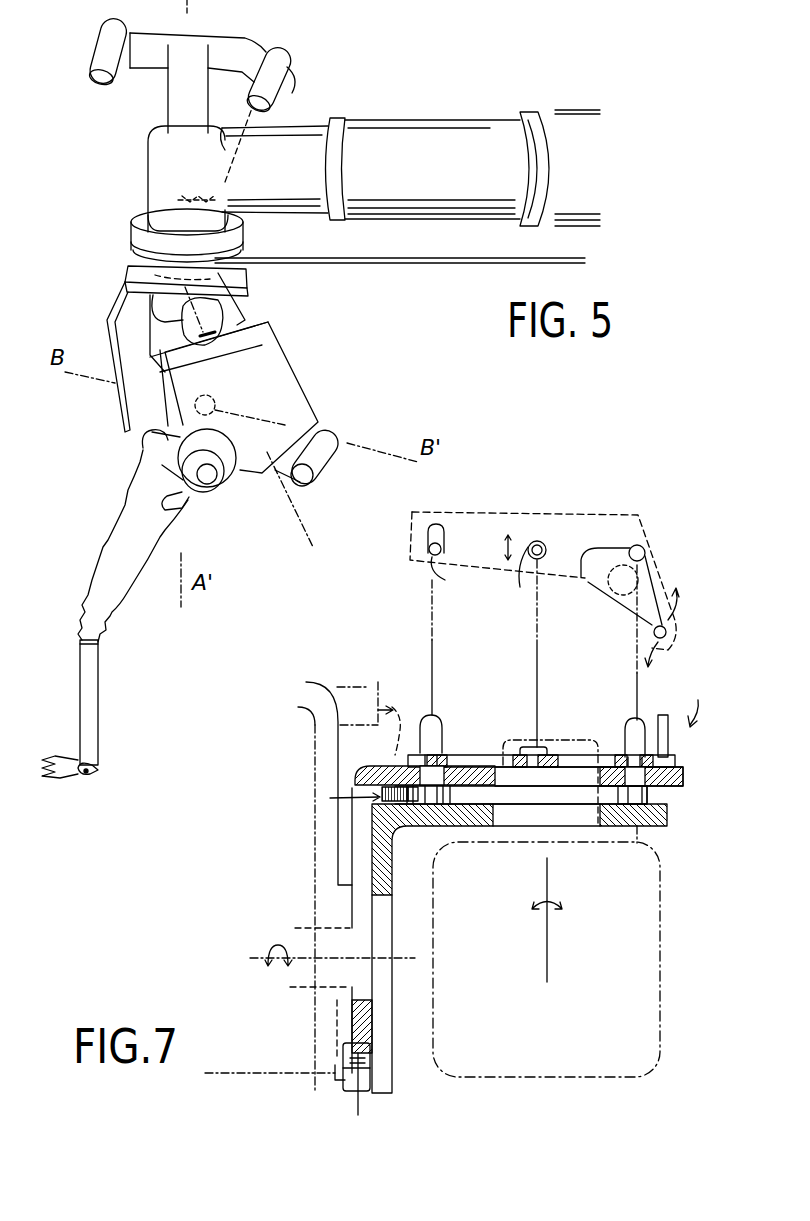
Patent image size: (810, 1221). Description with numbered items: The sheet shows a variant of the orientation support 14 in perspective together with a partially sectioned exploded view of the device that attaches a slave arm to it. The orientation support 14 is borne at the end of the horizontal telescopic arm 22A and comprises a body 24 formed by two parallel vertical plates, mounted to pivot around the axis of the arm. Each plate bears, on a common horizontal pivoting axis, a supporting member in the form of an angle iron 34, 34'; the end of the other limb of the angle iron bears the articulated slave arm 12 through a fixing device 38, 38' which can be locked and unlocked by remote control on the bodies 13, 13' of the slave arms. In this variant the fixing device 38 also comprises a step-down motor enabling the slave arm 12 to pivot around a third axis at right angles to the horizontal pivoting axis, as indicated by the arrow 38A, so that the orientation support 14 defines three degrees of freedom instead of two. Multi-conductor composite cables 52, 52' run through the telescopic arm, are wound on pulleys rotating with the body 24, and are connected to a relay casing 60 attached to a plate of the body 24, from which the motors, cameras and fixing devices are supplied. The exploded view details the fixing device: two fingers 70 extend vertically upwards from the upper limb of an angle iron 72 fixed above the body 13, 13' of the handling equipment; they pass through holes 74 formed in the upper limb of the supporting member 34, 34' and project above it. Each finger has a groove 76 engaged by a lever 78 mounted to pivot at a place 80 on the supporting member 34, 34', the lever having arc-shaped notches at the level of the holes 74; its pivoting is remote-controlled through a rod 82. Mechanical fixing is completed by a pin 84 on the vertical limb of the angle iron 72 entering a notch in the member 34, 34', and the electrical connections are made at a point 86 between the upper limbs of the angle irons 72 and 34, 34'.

In FIG. 5, the articulated slave arm 12 is at (103, 658).
In FIG. 7, the body of the slave arm 13 is at (432, 908).
In FIG. 7, the body of the slave arm 13' is at (547, 920).
In FIG. 5, the orientation support 14 is at (72, 455).
In FIG. 5, the horizontal telescopic arm 22A is at (436, 120).
In FIG. 5, the body 24 is at (110, 320).
In FIG. 7, the body 24 is at (313, 768).
In FIG. 5, the supporting member 34 is at (192, 441).
In FIG. 7, the supporting member 34 is at (481, 930).
In FIG. 7, the supporting member 34' is at (382, 994).
In FIG. 5, the fixing device 38 is at (250, 320).
In FIG. 7, the fixing device 38 is at (687, 667).
In FIG. 5, the arrow 38A is at (213, 337).
In FIG. 7, the fixing device 38' is at (686, 701).
In FIG. 5, the composite cable 52 is at (400, 277).
In FIG. 5, the composite cable 52' is at (147, 182).
In FIG. 7, the relay casing 60 is at (353, 690).
In FIG. 7, the finger 70 is at (638, 720).
In FIG. 7, the angle iron 72 is at (382, 1073).
In FIG. 7, the hole 74 is at (443, 773).
In FIG. 7, the groove 76 is at (410, 755).
In FIG. 7, the lever 78 is at (585, 514).
In FIG. 7, the pivot place 80 is at (530, 747).
In FIG. 7, the rod 82 is at (652, 633).
In FIG. 7, the pin 84 is at (362, 1028).
In FIG. 7, the point 86 is at (330, 798).